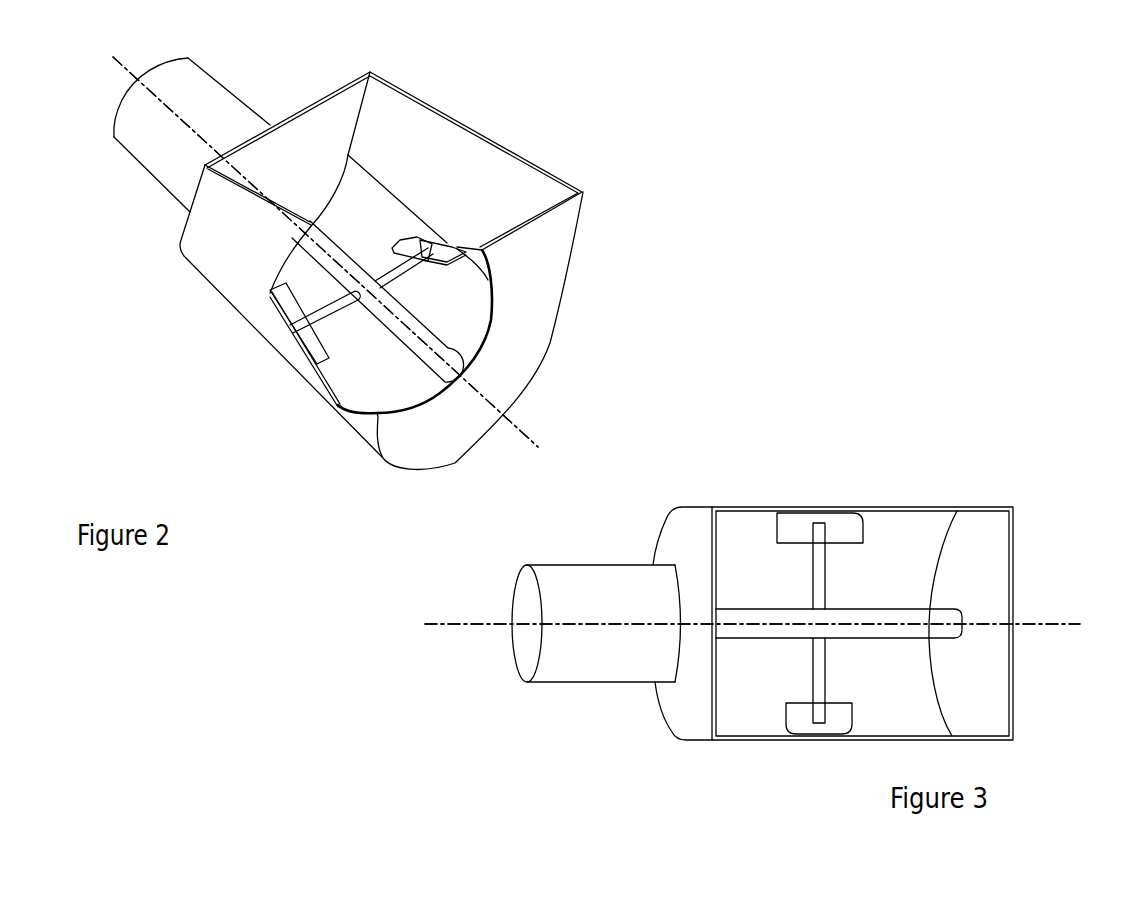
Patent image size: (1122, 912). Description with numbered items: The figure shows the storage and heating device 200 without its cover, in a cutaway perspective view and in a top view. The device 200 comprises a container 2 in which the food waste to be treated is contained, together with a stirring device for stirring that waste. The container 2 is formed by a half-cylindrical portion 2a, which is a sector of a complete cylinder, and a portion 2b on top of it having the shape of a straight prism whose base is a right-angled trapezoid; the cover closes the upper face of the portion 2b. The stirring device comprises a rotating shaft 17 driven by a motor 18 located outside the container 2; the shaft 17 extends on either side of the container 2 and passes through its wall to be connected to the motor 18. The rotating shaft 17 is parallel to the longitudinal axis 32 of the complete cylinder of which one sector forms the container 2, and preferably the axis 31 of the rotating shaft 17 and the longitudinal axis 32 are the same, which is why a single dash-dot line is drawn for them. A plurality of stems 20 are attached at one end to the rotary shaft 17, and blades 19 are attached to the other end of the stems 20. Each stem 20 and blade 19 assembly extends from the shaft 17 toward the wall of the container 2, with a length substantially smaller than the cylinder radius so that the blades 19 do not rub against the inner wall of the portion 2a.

In FIG. 2, the container 2 is at (349, 430).
In FIG. 3, the container 2 is at (662, 711).
In FIG. 2, the half-cylindrical portion 2a is at (225, 307).
In FIG. 2, the straight prism portion 2b is at (512, 151).
In FIG. 2, the rotating shaft 17 is at (450, 347).
In FIG. 3, the rotating shaft 17 is at (906, 612).
In FIG. 2, the motor 18 is at (165, 137).
In FIG. 3, the motor 18 is at (597, 619).
In FIG. 2, the blade 19 is at (456, 251).
In FIG. 3, the blade 19 is at (848, 529).
In FIG. 2, the stem 20 is at (398, 270).
In FIG. 3, the stem 20 is at (818, 570).
In FIG. 2, the axis of the rotating shaft 31 is at (530, 427).
In FIG. 3, the axis of the rotating shaft 31 is at (462, 626).
In FIG. 2, the longitudinal axis 32 is at (417, 252).
In FIG. 3, the longitudinal axis 32 is at (747, 590).
In FIG. 2, the storage and heating device 200 is at (556, 97).
In FIG. 3, the storage and heating device 200 is at (1028, 486).